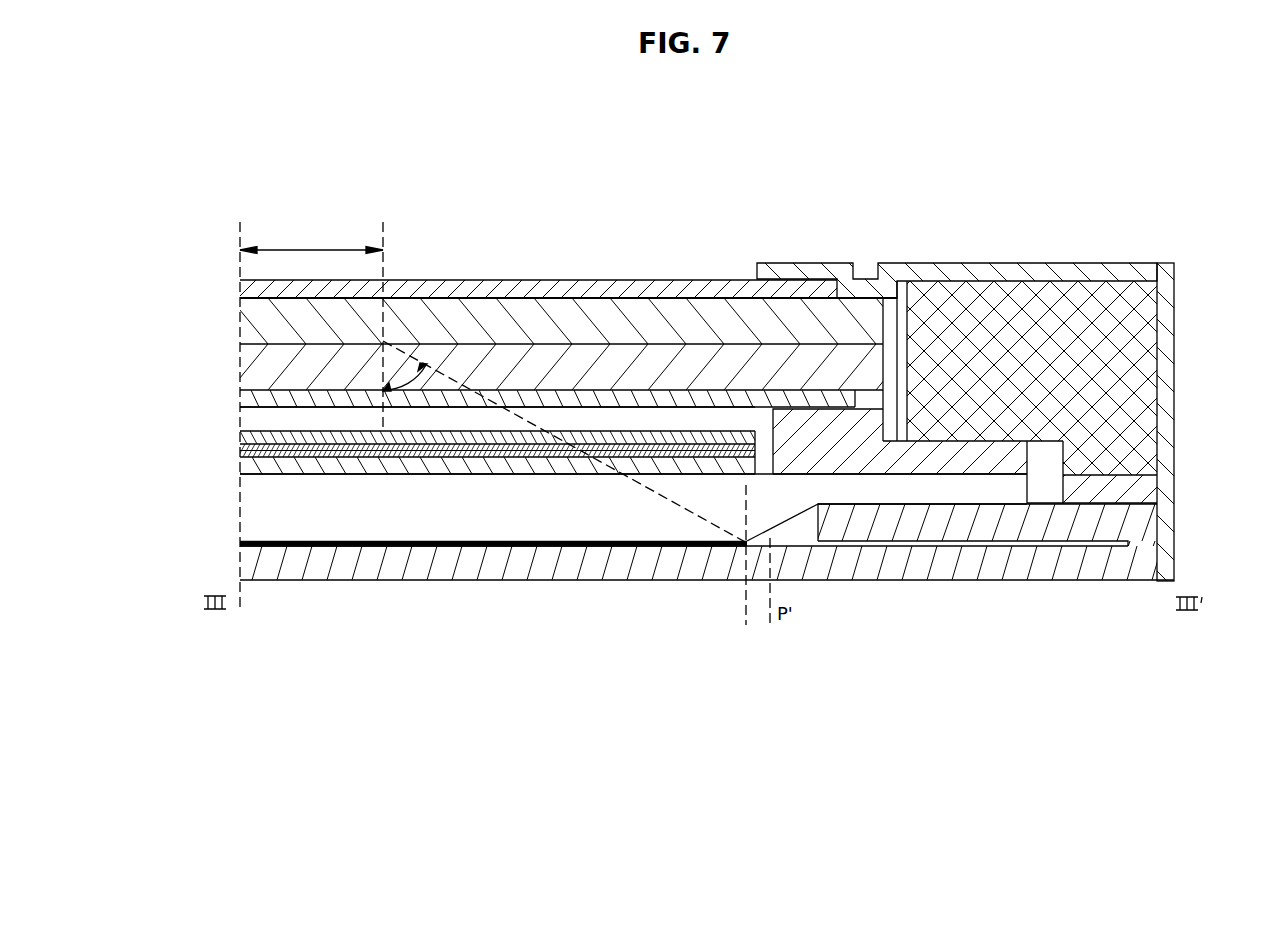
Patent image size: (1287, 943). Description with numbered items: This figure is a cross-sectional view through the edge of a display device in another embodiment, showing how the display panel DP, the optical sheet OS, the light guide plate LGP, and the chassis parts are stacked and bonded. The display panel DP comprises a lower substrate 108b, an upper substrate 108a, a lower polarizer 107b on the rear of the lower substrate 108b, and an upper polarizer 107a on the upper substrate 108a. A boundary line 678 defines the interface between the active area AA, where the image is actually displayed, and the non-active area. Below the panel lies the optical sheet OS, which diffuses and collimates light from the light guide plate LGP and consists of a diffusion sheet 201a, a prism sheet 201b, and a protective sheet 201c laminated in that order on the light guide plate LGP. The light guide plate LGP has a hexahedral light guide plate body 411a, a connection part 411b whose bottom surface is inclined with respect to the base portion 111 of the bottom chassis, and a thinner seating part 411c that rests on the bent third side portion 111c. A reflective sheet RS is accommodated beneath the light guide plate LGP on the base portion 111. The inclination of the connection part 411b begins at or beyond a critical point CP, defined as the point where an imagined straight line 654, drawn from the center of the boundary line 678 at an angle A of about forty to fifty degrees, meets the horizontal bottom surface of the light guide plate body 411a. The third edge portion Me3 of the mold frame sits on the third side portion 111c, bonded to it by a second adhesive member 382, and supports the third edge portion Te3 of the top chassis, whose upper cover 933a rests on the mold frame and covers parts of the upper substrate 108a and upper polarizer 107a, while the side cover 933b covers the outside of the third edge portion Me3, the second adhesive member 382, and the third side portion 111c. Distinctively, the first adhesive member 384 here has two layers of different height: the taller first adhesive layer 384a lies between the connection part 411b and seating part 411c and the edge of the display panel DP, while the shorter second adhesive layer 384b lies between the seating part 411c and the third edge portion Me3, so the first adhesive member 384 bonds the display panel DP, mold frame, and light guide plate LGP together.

The display panel DP is at (703, 191).
The upper polarizer 107a is at (503, 288).
The upper substrate 108a is at (565, 300).
The lower substrate 108b is at (635, 365).
The lower polarizer 107b is at (700, 400).
The boundary line 678 is at (385, 279).
The active area AA is at (311, 239).
The angle A is at (565, 442).
The optical sheet OS is at (146, 413).
The protective sheet 201c is at (242, 434).
The prism sheet 201b is at (242, 452).
The diffusion sheet 201a is at (242, 469).
The imagined straight line 654 is at (518, 412).
The third edge portion of the top chassis Te3 is at (1203, 191).
The upper cover 933a is at (1095, 275).
The side cover 933b is at (1165, 332).
The third edge portion of the mold frame Me3 is at (1077, 377).
The first adhesive member 384 is at (1023, 695).
The first adhesive layer 384a is at (845, 437).
The second adhesive layer 384b is at (967, 455).
The second adhesive member 382 is at (1127, 488).
The base portion 111 is at (1100, 567).
The third side portion 111c is at (1053, 525).
The reflective sheet RS is at (570, 555).
The light guide plate LGP is at (877, 683).
The light guide plate body 411a is at (630, 515).
The connection part 411b is at (783, 503).
The seating part 411c is at (858, 490).
The critical point CP is at (727, 555).